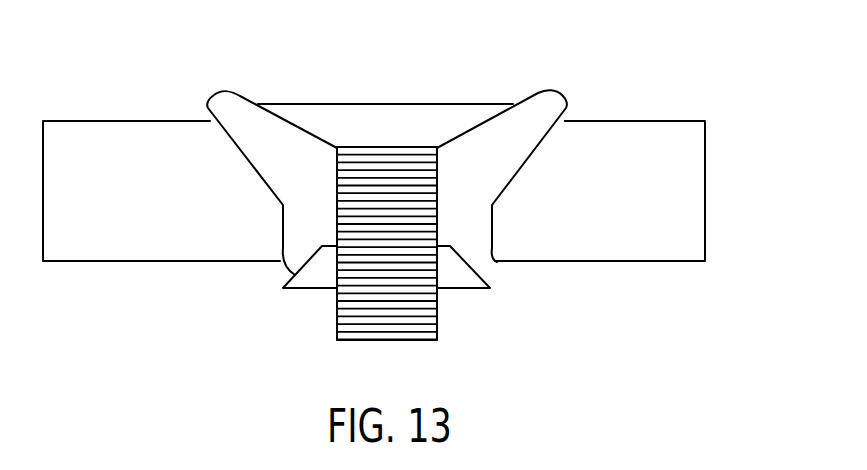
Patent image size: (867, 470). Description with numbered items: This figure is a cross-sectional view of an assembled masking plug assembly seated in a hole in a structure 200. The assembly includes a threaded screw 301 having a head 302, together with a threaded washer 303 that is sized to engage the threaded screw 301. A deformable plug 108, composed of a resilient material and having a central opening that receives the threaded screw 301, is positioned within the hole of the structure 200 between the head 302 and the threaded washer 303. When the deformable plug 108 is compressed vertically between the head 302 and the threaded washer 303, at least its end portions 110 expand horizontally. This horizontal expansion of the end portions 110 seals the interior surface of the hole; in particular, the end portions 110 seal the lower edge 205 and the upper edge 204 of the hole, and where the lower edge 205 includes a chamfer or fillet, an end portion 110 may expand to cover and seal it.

The structure 200 is at (705, 180).
The lower edge 205 is at (563, 118).
The upper edge 204 is at (497, 262).
The head 302 is at (457, 103).
The deformable plug 108 is at (240, 156).
The end portions 110 is at (558, 92).
The threaded washer 303 is at (303, 290).
The threaded screw 301 is at (437, 327).